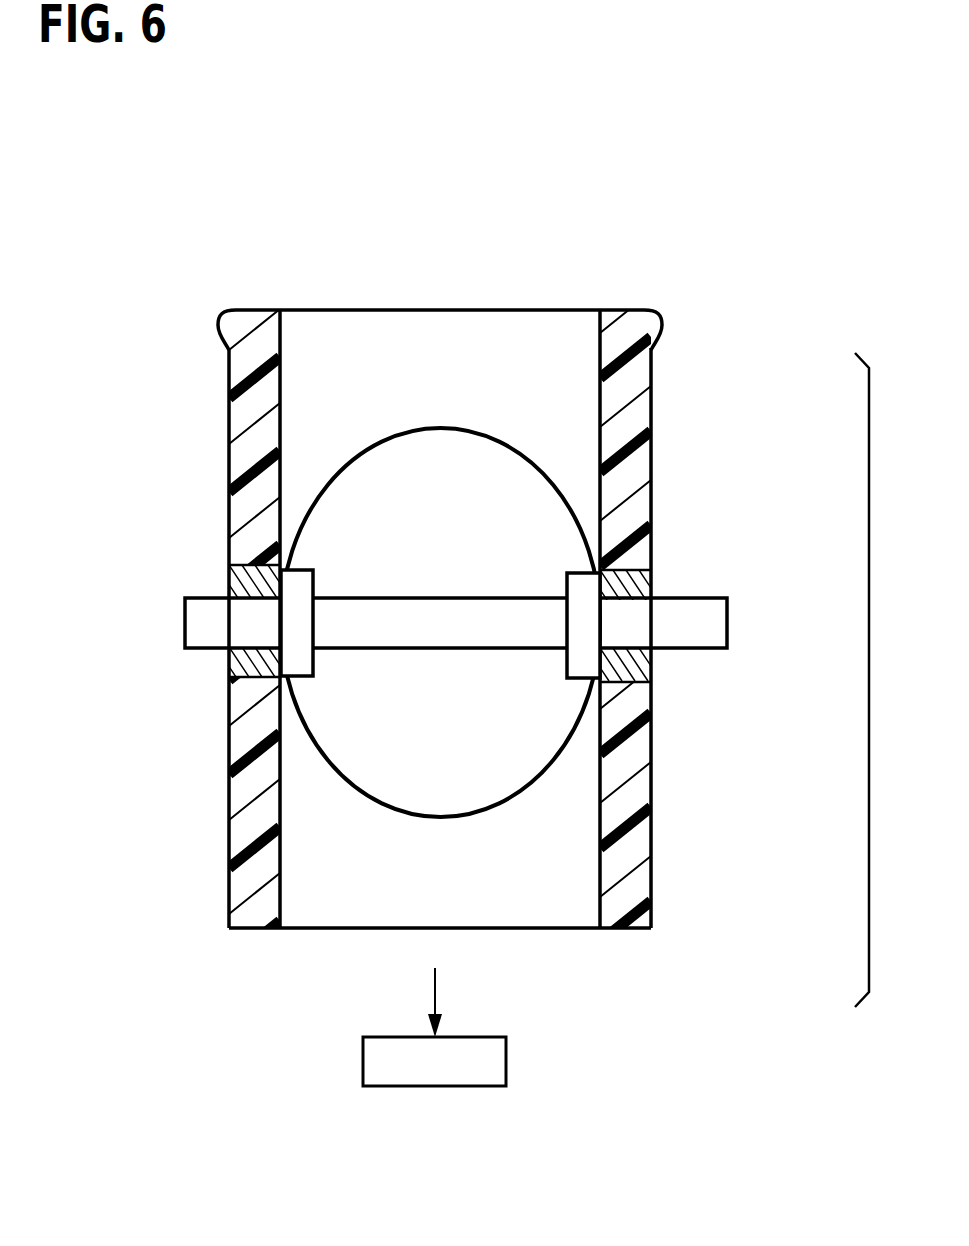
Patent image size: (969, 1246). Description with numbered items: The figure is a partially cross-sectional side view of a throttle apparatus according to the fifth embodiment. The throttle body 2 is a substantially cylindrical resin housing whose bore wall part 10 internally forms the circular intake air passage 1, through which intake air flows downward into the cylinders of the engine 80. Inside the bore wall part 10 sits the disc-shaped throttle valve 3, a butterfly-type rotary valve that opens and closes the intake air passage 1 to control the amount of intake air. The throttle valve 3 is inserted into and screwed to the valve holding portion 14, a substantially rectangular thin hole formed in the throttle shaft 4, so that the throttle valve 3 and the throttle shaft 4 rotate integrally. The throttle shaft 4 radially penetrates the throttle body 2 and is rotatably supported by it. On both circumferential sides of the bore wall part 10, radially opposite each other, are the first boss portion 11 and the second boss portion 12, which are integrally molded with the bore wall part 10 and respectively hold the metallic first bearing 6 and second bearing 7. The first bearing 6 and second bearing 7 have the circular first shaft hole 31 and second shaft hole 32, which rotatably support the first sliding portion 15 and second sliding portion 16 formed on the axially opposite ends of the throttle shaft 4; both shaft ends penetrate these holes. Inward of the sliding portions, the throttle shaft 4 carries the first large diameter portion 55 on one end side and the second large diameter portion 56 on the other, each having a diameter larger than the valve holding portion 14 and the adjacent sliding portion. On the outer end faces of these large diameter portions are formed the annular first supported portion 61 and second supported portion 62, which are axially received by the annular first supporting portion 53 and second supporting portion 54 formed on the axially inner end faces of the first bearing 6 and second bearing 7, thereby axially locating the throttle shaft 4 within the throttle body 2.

The intake air passage 1 is at (365, 335).
The throttle body 2 is at (474, 610).
The throttle valve 3 is at (428, 455).
The throttle shaft 4 is at (439, 468).
The valve holding portion 14 is at (439, 647).
The bore wall part 10 is at (637, 380).
The first bearing 6 is at (223, 564).
The second bearing 7 is at (656, 570).
The first boss portion 11 is at (223, 612).
The second boss portion 12 is at (656, 614).
The first supported portion 61 is at (248, 590).
The second supported portion 62 is at (640, 595).
The first sliding portion 15 is at (250, 683).
The second sliding portion 16 is at (598, 681).
The first shaft hole 31 is at (252, 648).
The second shaft hole 32 is at (660, 650).
The first supporting portion 53 is at (233, 616).
The second supporting portion 54 is at (651, 616).
The first large diameter portion 55 is at (303, 582).
The second large diameter portion 56 is at (585, 580).
The engine 80 is at (506, 1055).